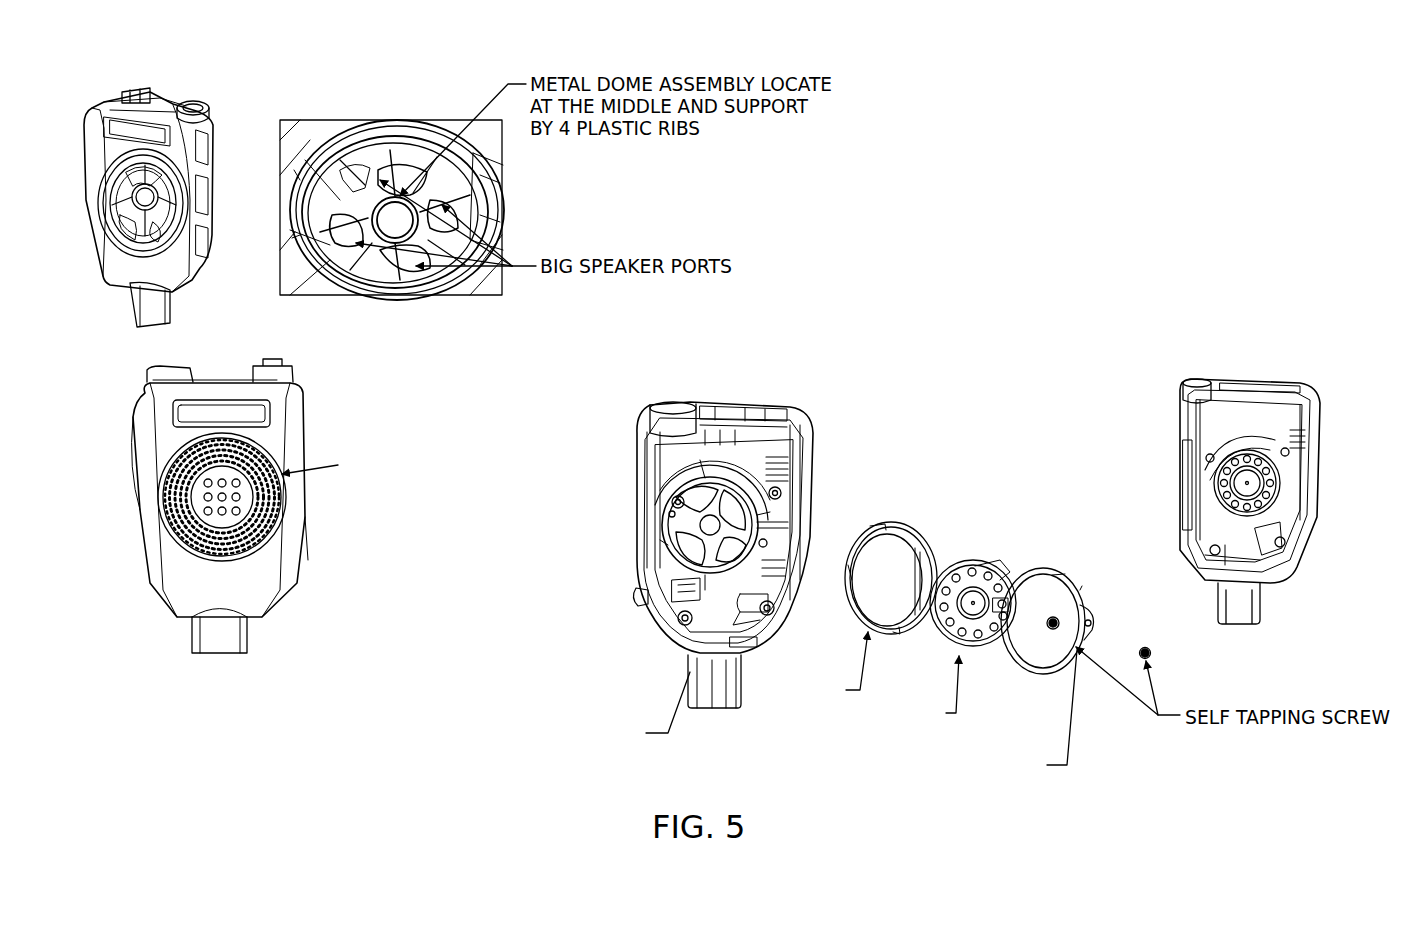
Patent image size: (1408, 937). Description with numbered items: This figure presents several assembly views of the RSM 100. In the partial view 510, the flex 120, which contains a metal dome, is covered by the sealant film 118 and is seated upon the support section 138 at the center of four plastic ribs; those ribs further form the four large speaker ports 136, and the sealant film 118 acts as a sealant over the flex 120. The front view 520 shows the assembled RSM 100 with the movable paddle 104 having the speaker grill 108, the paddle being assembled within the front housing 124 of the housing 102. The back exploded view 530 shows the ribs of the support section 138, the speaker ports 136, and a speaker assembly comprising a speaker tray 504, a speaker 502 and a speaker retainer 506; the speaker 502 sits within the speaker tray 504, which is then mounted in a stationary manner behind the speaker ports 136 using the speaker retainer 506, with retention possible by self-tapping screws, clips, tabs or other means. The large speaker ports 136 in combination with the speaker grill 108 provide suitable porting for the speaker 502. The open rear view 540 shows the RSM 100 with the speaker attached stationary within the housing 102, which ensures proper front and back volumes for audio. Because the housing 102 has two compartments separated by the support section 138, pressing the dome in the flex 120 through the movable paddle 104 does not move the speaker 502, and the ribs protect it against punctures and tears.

The RSM 100 is at (213, 130).
The housing 102 is at (1298, 390).
The movable paddle 104 is at (240, 520).
The speaker grill 108 is at (347, 497).
The sealant film 118 is at (353, 190).
The flex 120 is at (398, 212).
The front housing 124 is at (636, 598).
The speaker ports 136 is at (697, 562).
The support section 138 is at (733, 420).
The speaker 502 is at (984, 550).
The speaker tray 504 is at (929, 541).
The speaker retainer 506 is at (1056, 572).
The partial view 510 is at (472, 332).
The front view 520 is at (349, 637).
The back exploded view 530 is at (901, 782).
The open rear view 540 is at (1334, 677).